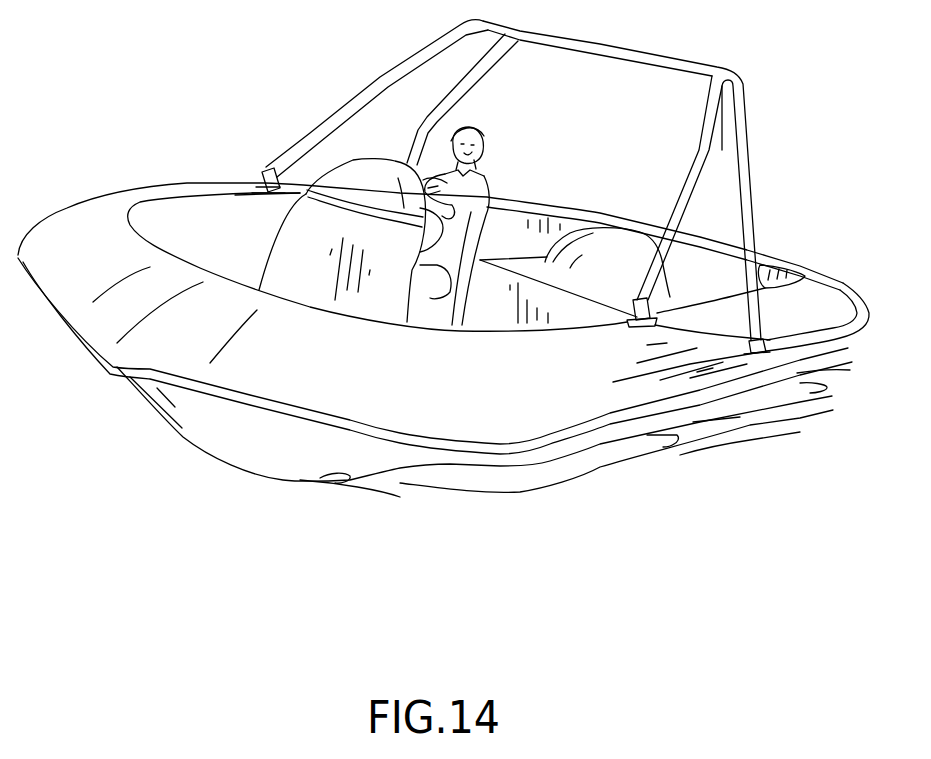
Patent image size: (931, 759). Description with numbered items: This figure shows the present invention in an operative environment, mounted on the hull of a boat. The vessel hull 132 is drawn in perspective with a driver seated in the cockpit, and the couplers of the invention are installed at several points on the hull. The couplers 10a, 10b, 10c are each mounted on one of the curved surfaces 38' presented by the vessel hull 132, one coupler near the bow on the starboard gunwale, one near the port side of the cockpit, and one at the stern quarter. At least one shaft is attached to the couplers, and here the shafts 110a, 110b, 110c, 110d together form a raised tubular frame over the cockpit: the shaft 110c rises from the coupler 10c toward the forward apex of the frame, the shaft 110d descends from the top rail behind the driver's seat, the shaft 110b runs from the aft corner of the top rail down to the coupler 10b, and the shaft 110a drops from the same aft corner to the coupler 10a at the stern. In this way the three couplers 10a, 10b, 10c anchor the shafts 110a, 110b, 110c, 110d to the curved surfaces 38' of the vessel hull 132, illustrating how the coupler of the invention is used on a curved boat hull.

The shaft 110a is at (748, 124).
The shaft 110b is at (682, 183).
The shaft 110c is at (377, 80).
The shaft 110d is at (497, 63).
The coupler 10a is at (772, 352).
The coupler 10b is at (633, 327).
The coupler 10c is at (258, 176).
The curved surface 38' is at (827, 272).
The vessel hull 132 is at (543, 405).